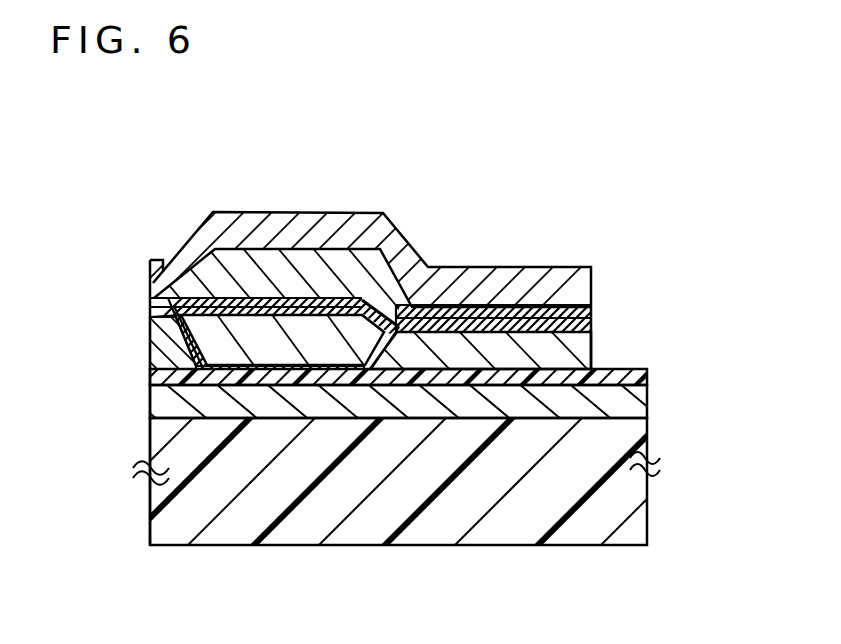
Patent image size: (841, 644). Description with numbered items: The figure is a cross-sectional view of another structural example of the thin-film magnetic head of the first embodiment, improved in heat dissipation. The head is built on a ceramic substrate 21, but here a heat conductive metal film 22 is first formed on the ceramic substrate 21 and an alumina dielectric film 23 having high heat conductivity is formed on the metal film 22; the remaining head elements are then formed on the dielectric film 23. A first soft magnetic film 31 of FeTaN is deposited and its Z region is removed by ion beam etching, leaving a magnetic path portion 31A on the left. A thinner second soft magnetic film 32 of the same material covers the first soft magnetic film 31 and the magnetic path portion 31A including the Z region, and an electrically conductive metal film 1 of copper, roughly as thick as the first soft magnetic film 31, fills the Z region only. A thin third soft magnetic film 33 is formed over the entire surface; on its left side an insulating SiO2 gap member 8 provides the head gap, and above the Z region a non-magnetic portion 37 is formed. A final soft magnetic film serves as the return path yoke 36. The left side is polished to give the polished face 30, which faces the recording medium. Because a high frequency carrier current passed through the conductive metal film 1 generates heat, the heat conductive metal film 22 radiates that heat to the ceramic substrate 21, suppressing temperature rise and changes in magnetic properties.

The electrically conductive metal film 1 is at (305, 328).
The gap member 8 is at (148, 297).
The ceramic substrate 21 is at (648, 454).
The heat conductive metal film 22 is at (618, 403).
The alumina dielectric film 23 is at (632, 378).
The polished face 30 is at (132, 298).
The first soft magnetic film 31 is at (580, 353).
The magnetic path portion 31A is at (168, 347).
The second soft magnetic film 32 is at (158, 333).
The third soft magnetic film 33 is at (148, 317).
The return path yoke 36 is at (478, 272).
The non-magnetic portion 37 is at (286, 260).